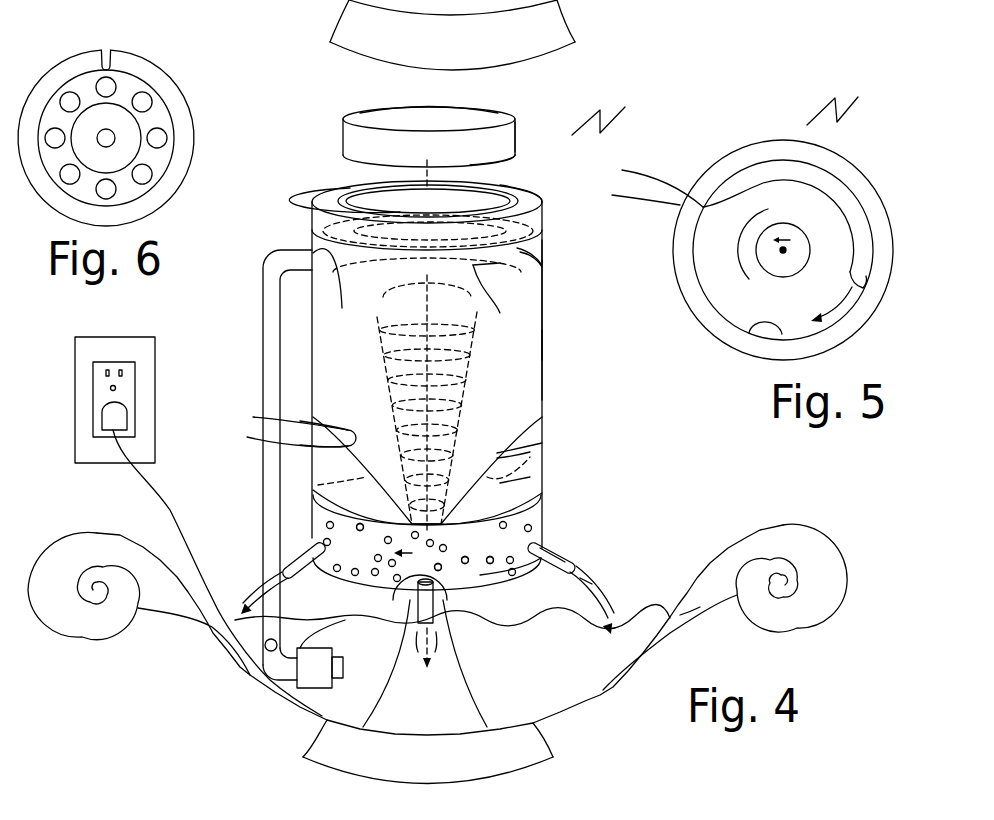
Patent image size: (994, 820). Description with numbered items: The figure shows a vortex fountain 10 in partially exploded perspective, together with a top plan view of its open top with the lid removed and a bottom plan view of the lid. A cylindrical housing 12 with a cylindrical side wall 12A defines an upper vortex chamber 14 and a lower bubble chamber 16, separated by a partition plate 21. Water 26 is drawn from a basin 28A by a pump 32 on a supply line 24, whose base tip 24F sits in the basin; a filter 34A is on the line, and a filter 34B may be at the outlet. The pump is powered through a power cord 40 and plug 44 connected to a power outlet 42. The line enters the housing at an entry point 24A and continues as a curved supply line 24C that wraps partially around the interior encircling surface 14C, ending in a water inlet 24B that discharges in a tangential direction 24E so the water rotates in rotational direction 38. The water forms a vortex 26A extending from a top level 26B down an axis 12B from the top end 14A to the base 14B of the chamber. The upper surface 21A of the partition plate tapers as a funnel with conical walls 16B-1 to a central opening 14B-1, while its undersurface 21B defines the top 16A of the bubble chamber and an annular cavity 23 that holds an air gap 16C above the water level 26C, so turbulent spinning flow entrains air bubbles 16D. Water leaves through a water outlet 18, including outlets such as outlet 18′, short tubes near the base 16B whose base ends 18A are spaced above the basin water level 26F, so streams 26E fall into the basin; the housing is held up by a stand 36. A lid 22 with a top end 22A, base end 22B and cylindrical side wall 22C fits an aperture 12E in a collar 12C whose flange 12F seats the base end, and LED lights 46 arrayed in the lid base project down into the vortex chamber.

In FIG. 4, the vortex fountain 10 is at (611, 109).
In FIG. 5, the vortex fountain 10 is at (847, 99).
In FIG. 4, the housing 12 is at (543, 352).
In FIG. 4, the cylindrical side wall 12A is at (542, 323).
In FIG. 4, the axis 12B is at (398, 393).
In FIG. 5, the axis 12B is at (790, 248).
In FIG. 4, the collar 12C is at (543, 227).
In FIG. 4, the aperture 12E is at (392, 196).
In FIG. 4, the flange 12F is at (367, 200).
In FIG. 4, the vortex chamber 14 is at (530, 372).
In FIG. 4, the top end 14A is at (313, 198).
In FIG. 4, the base 14B is at (578, 456).
In FIG. 4, the opening 14B-1 is at (486, 547).
In FIG. 4, the interior encircling surface 14C is at (540, 343).
In FIG. 5, the interior encircling surface 14C is at (780, 333).
In FIG. 4, the bubble chamber 16 is at (527, 517).
In FIG. 4, the top 16A is at (542, 443).
In FIG. 4, the base 16B is at (507, 578).
In FIG. 4, the conical walls 16B-1 is at (530, 452).
In FIG. 4, the air gap 16C is at (530, 477).
In FIG. 4, the air bubbles 16D is at (326, 525).
In FIG. 4, the water outlet 18 is at (550, 547).
In FIG. 4, the water outlet 18′ is at (582, 572).
In FIG. 4, the base end 18A is at (587, 567).
In FIG. 4, the partition plate 21 is at (343, 455).
In FIG. 4, the upper surface 21A is at (300, 421).
In FIG. 4, the undersurface 21B is at (300, 445).
In FIG. 4, the lid 22 is at (497, 116).
In FIG. 6, the lid 22 is at (178, 83).
In FIG. 4, the top end 22A is at (458, 116).
In FIG. 4, the base end 22B is at (487, 163).
In FIG. 6, the base end 22B is at (128, 58).
In FIG. 4, the cylindrical side wall 22C is at (517, 135).
In FIG. 4, the annular cavity 23 is at (327, 478).
In FIG. 4, the supply line 24 is at (263, 350).
In FIG. 5, the supply line 24 is at (657, 173).
In FIG. 4, the entry point 24A is at (340, 291).
In FIG. 4, the water inlet 24B is at (503, 300).
In FIG. 5, the water inlet 24B is at (862, 288).
In FIG. 4, the curved supply line 24C is at (542, 252).
In FIG. 5, the curved supply line 24C is at (780, 167).
In FIG. 5, the direction 24E is at (841, 302).
In FIG. 4, the base tip 24F is at (343, 672).
In FIG. 4, the water 26 is at (505, 440).
In FIG. 4, the vortex 26A is at (387, 365).
In FIG. 4, the top level 26B is at (542, 267).
In FIG. 4, the water level 26C is at (530, 457).
In FIG. 4, the streams 26E is at (587, 577).
In FIG. 4, the water level 26F is at (680, 610).
In FIG. 4, the basin 28A is at (592, 3).
In FIG. 4, the pump 32 is at (308, 647).
In FIG. 4, the filter 34A is at (276, 640).
In FIG. 4, the filter 34B is at (412, 578).
In FIG. 4, the stand 36 is at (463, 685).
In FIG. 4, the rotational direction 38 is at (412, 553).
In FIG. 5, the rotational direction 38 is at (749, 279).
In FIG. 4, the power cord 40 is at (167, 495).
In FIG. 4, the power outlet 42 is at (147, 375).
In FIG. 4, the plug 44 is at (103, 415).
In FIG. 6, the LED lights 46 is at (147, 100).